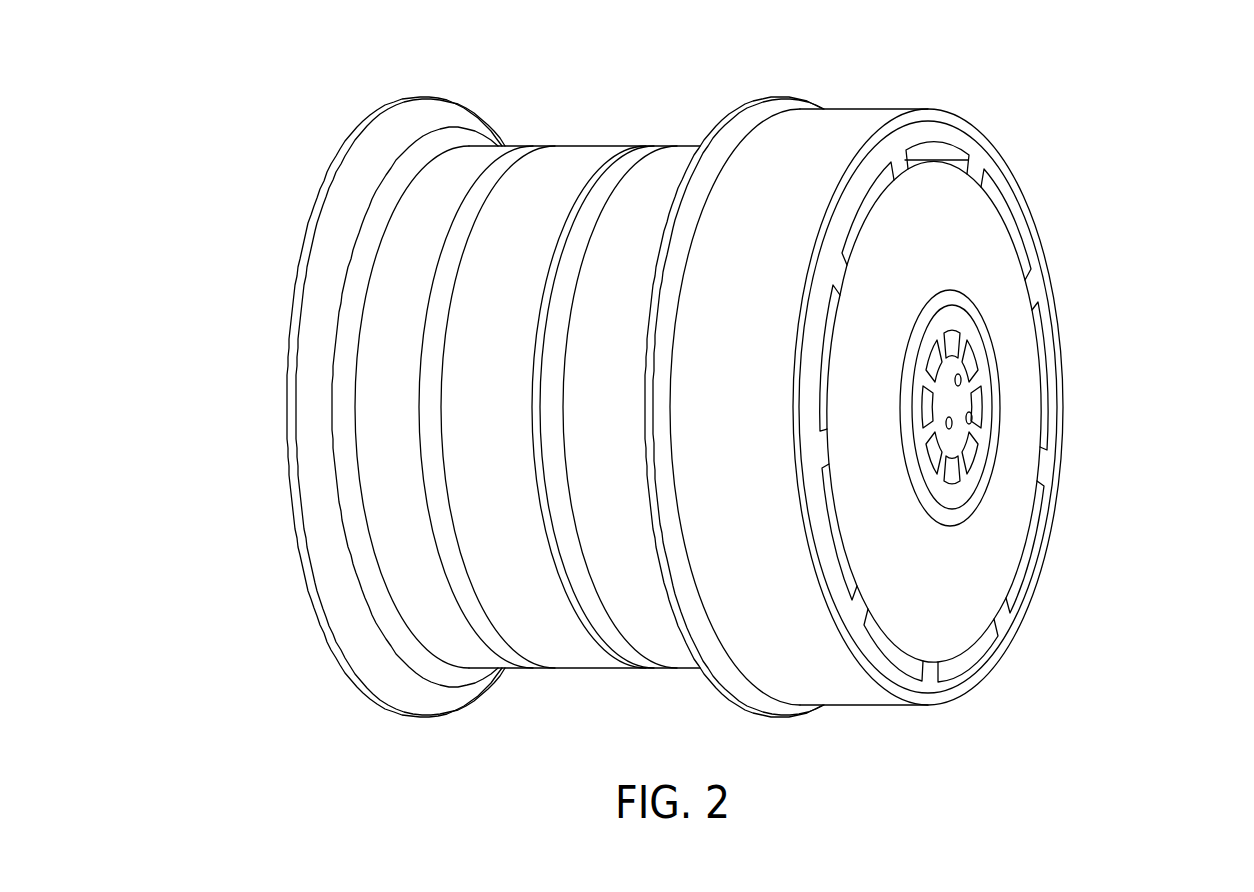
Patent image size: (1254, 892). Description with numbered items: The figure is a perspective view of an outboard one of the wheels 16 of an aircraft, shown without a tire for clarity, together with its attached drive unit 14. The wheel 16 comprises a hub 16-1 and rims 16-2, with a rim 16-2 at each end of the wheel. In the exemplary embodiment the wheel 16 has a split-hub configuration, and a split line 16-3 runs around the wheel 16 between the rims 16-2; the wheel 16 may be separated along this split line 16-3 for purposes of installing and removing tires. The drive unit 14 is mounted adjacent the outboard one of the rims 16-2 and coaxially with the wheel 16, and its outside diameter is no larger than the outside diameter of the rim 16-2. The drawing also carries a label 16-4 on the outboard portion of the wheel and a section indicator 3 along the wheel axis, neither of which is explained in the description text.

The drive unit 14 is at (1018, 282).
The wheel 16 is at (588, 146).
The hub 16-1 is at (432, 404).
The rims 16-2 is at (287, 455).
The split line 16-3 is at (556, 405).
The bead seat 16-4 is at (866, 108).
The section line 3- 3 is at (286, 408).